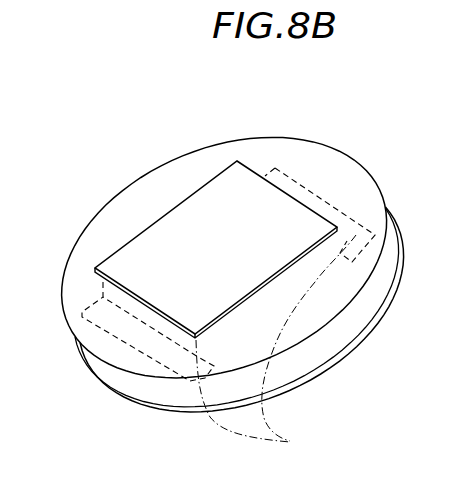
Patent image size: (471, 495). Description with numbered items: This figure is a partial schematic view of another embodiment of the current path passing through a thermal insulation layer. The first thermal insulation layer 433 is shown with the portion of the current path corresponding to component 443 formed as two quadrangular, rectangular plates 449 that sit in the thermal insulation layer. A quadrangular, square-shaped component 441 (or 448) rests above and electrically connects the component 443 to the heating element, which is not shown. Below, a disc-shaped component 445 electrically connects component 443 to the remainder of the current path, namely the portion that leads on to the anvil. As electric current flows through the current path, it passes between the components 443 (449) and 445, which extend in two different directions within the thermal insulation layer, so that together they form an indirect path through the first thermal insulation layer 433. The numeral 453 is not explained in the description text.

The base housing 433 is at (272, 147).
The cover plate 441 is at (177, 233).
The fastener 443 is at (276, 345).
The rim edge 445 is at (323, 370).
The top surface 448 is at (230, 207).
The slot 449 is at (356, 235).
The sensor assembly 453 is at (8, 126).